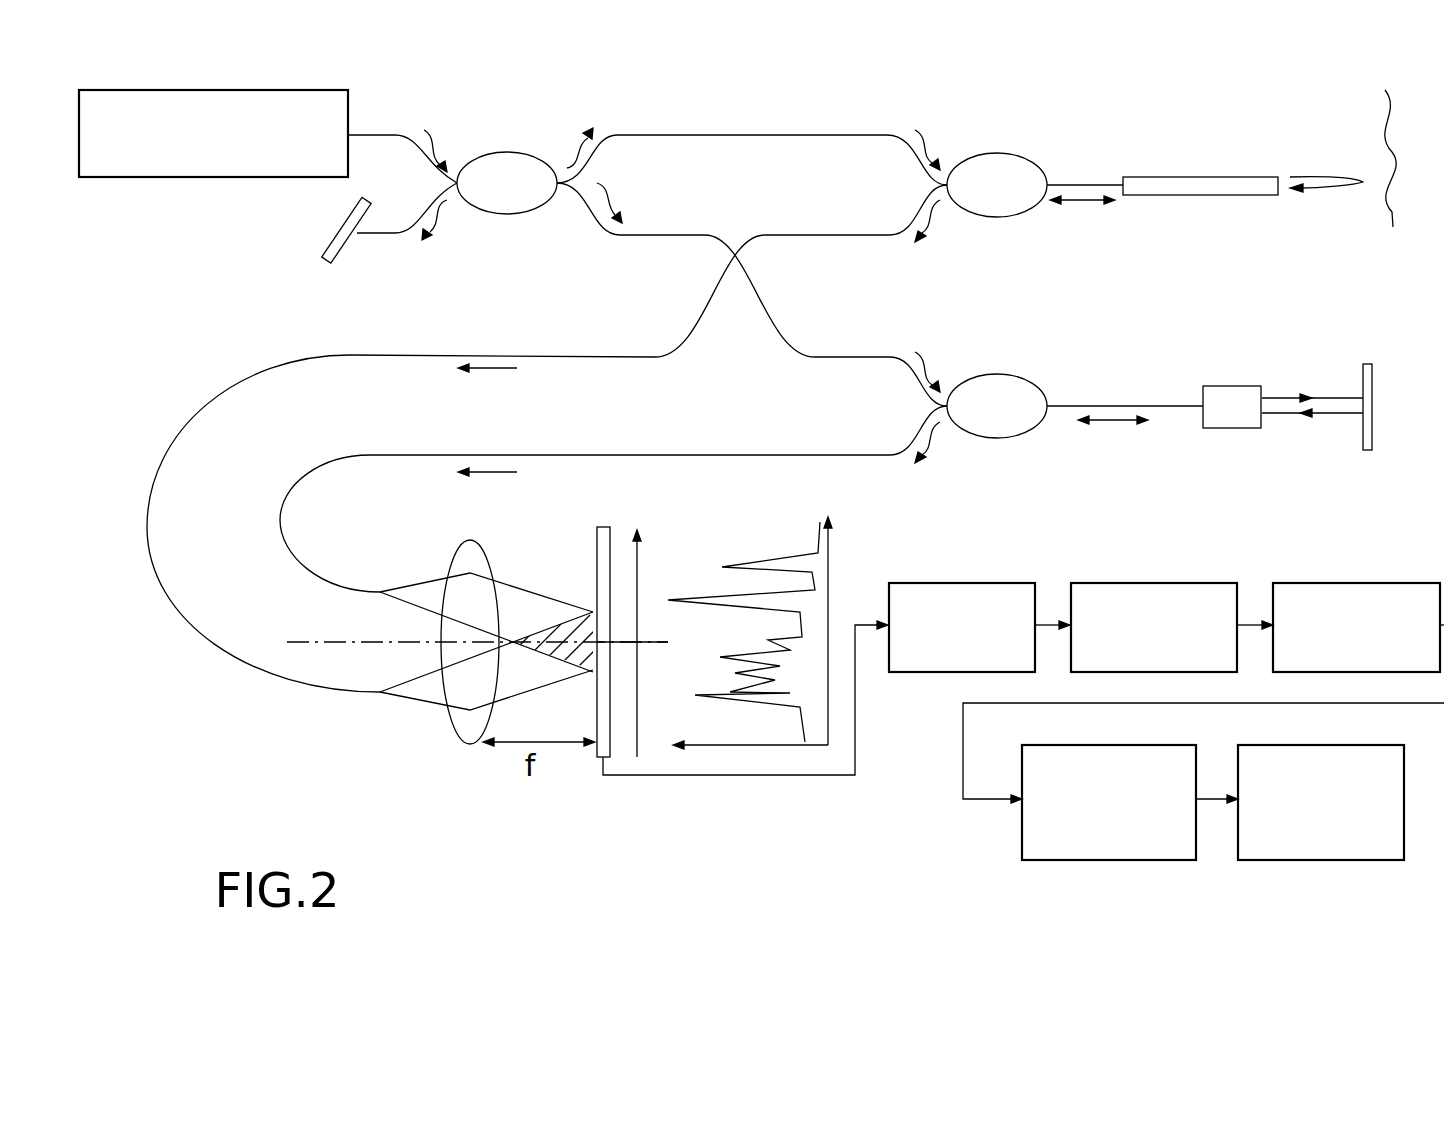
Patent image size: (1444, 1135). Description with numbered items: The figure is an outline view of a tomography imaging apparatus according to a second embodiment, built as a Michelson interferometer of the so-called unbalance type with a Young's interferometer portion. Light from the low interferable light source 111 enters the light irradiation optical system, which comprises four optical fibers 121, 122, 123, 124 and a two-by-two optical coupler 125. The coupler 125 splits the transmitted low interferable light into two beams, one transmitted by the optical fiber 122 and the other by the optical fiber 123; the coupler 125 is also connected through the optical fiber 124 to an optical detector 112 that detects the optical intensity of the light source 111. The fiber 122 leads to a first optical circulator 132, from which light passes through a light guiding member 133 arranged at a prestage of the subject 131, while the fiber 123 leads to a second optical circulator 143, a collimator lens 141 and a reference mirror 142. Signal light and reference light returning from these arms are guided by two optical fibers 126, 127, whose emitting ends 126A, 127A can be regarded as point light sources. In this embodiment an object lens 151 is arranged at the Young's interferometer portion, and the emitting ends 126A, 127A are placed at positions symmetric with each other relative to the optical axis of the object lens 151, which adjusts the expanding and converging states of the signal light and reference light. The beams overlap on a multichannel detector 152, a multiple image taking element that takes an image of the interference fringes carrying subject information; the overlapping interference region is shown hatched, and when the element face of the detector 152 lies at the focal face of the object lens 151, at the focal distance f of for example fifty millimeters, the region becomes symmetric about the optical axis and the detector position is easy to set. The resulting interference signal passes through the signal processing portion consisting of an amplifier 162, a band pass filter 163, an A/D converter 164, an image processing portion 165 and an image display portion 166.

The low interferable light source 111 is at (158, 177).
The optical detector 112 is at (339, 262).
The optical fiber 121 is at (380, 133).
The optical fiber 122 is at (670, 135).
The optical fiber 123 is at (597, 218).
The optical fiber 124 is at (403, 233).
The optical coupler 125 is at (505, 153).
The optical fiber 126 is at (680, 357).
The emitting end 126A is at (380, 692).
The optical fiber 127 is at (700, 457).
The emitting end 127A is at (380, 590).
The subject 131 is at (1345, 139).
The first optical circulator 132 is at (1015, 157).
The light guiding member 133 is at (1192, 177).
The collimator lens 141 is at (1236, 428).
The reference mirror 142 is at (1375, 378).
The second optical circulator 143 is at (1003, 375).
The object lens 151 is at (490, 548).
The multichannel detector 152 is at (597, 757).
The amplifier 162 is at (955, 583).
The band pass filter 163 is at (1178, 583).
The A/D converter 164 is at (1377, 583).
The image processing portion 165 is at (1107, 860).
The image display portion 166 is at (1327, 860).